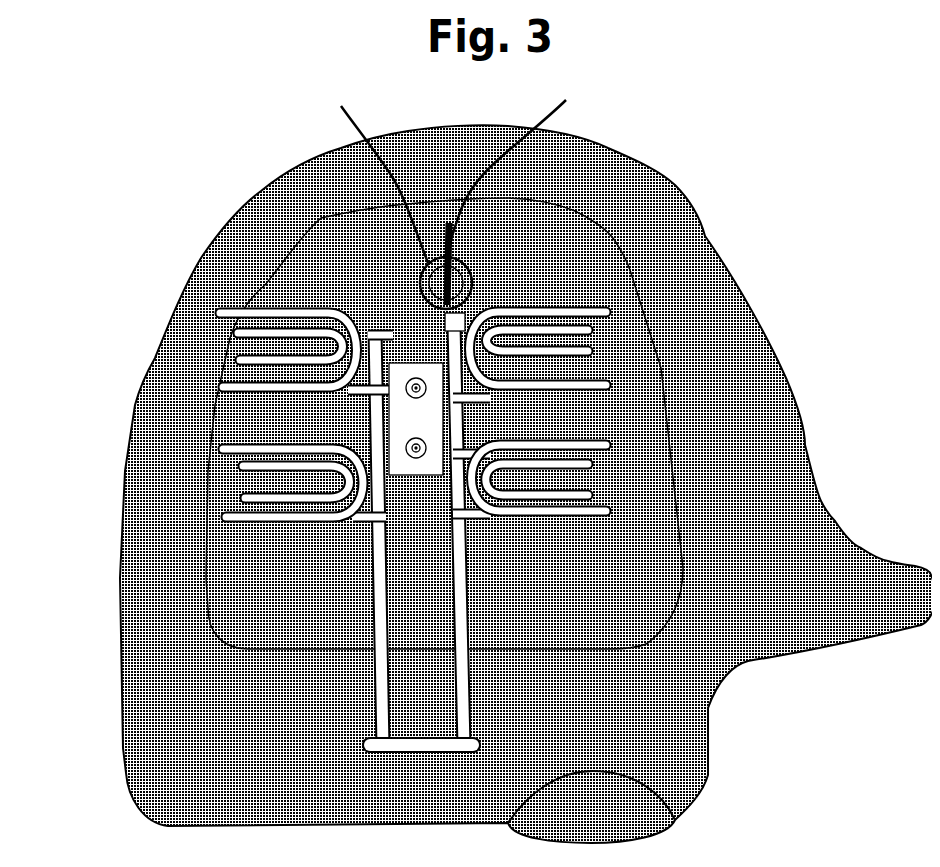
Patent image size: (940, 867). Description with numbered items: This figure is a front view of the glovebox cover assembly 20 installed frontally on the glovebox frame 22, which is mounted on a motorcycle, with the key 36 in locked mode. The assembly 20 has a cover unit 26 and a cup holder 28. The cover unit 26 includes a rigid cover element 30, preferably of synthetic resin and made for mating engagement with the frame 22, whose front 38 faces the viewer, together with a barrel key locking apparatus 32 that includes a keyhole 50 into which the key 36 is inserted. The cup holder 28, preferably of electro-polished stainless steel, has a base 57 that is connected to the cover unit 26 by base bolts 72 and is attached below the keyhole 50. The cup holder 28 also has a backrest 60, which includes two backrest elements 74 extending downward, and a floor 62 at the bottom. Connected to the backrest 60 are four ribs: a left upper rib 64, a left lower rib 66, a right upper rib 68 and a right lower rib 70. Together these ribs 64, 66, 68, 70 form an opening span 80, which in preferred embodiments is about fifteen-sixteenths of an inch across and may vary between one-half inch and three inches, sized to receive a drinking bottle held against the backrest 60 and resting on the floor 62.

The glovebox cover assembly 20 is at (678, 176).
The glovebox frame 22 is at (157, 405).
The cover unit 26 is at (648, 534).
The cup holder 28 is at (354, 521).
The cover element 30 is at (566, 571).
The barrel key locking apparatus 32 is at (335, 96).
The key 36 is at (530, 162).
The front 38 is at (648, 609).
The keyhole 50 is at (414, 285).
The base 57 is at (386, 413).
The backrest 60 is at (346, 655).
The floor 62 is at (356, 747).
The left upper rib 64 is at (205, 320).
The left lower rib 66 is at (220, 447).
The right upper rib 68 is at (597, 300).
The right lower rib 70 is at (592, 437).
The base bolts 72 is at (406, 370).
The backrest elements 74 is at (365, 697).
The opening span 80 is at (353, 548).